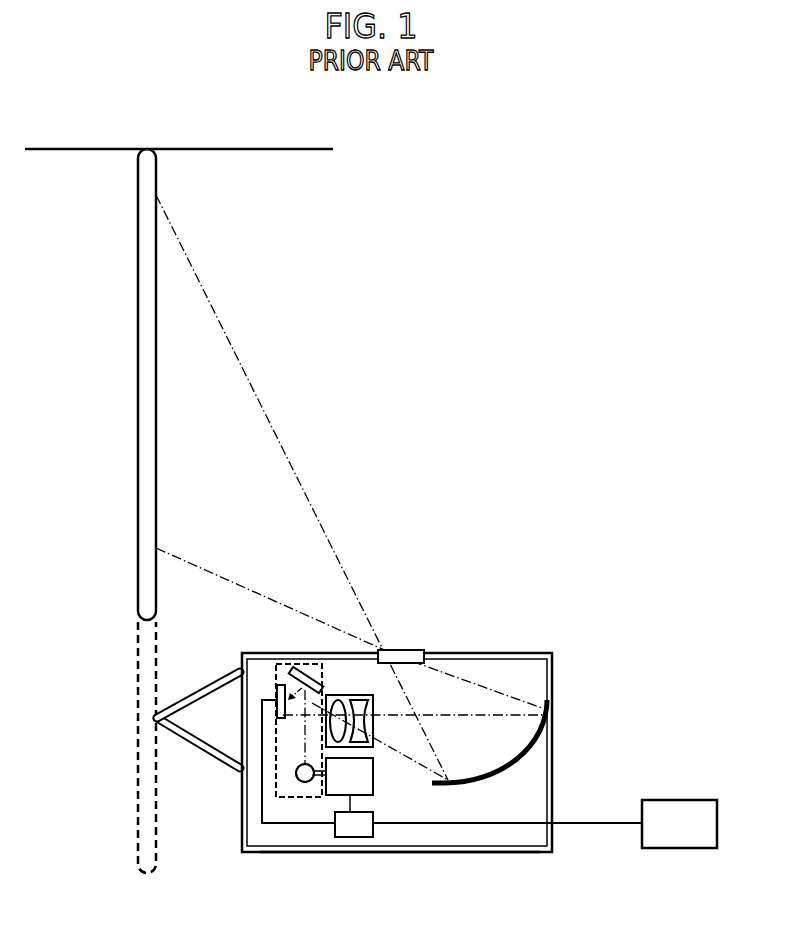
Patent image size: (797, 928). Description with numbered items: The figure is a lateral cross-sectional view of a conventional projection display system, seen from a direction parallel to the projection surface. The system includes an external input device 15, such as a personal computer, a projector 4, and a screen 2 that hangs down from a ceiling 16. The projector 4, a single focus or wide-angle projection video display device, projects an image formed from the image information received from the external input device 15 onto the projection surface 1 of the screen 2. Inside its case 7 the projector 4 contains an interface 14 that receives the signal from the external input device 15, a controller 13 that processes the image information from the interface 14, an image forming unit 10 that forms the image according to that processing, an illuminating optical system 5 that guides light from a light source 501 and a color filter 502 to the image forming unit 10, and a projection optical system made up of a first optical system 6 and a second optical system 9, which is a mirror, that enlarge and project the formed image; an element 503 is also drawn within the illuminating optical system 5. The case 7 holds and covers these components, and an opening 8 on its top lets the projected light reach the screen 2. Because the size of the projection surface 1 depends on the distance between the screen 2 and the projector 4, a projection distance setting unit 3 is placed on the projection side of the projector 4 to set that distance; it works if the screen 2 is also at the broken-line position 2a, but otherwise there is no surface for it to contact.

The projection surface 1 is at (157, 258).
The screen 2 is at (137, 366).
The position of screen 2a is at (137, 812).
The projection distance setting unit 3 is at (197, 746).
The projector 4 is at (568, 670).
The illuminating optical system 5 is at (280, 664).
The first optical system 6 is at (352, 693).
The case 7 is at (535, 853).
The opening 8 is at (410, 650).
The second optical system 9 is at (512, 769).
The image forming unit 10 is at (279, 688).
The controller 13 is at (373, 785).
The interface 14 is at (352, 837).
The external input device 15 is at (690, 800).
The ceiling 16 is at (197, 139).
The light source 501 is at (296, 776).
The color filter 502 is at (305, 783).
The reflecting mirror 503 is at (299, 669).